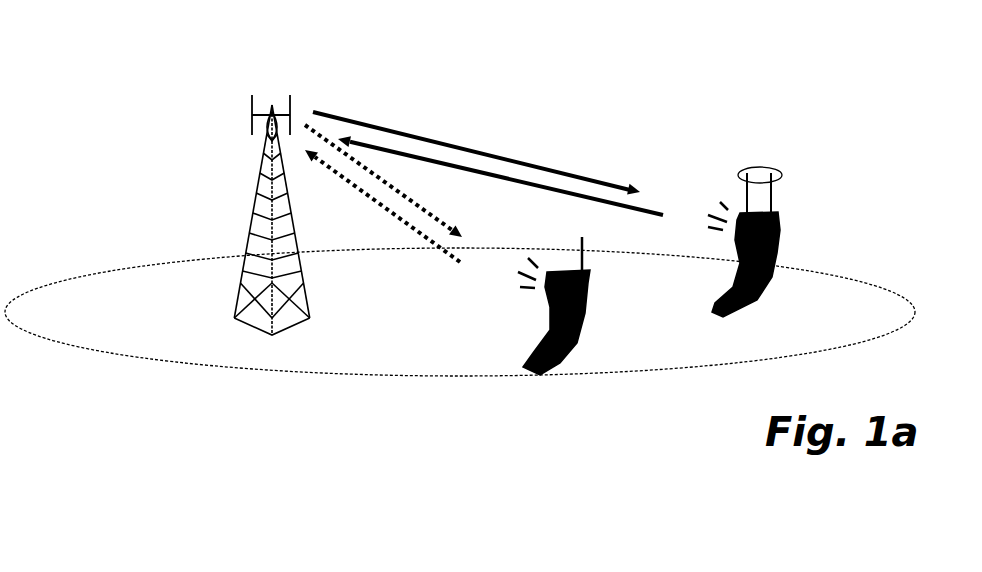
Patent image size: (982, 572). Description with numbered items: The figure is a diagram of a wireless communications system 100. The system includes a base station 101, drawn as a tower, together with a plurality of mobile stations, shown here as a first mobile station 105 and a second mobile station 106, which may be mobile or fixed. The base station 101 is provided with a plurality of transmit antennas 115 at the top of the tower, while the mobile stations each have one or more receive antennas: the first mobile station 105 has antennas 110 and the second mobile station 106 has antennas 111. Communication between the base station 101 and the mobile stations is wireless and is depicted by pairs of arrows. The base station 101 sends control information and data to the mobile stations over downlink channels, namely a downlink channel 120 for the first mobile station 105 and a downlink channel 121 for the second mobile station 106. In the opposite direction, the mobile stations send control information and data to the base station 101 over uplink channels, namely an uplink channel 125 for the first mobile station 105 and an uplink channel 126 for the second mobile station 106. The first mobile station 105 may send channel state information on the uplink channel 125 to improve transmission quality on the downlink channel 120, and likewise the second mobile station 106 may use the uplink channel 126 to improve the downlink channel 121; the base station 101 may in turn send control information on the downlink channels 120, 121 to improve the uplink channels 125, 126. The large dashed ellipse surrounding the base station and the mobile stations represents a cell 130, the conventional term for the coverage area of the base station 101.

The wireless communications system 100 is at (104, 90).
The base station 101 is at (237, 302).
The mobile station 105 is at (793, 228).
The mobile station 106 is at (592, 287).
The antennas 110 is at (762, 167).
The antennas 111 is at (583, 240).
The transmit antennas 115 is at (256, 105).
The downlink channel 120 is at (480, 142).
The downlink channel 121 is at (428, 212).
The uplink channel 125 is at (497, 187).
The uplink channel 126 is at (378, 212).
The cell 130 is at (422, 368).